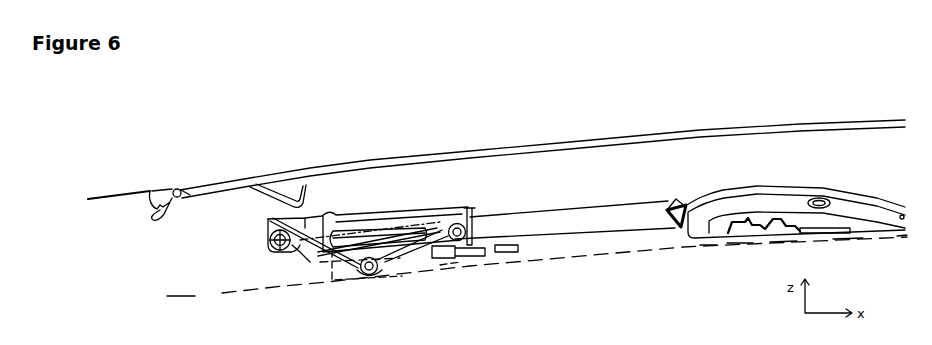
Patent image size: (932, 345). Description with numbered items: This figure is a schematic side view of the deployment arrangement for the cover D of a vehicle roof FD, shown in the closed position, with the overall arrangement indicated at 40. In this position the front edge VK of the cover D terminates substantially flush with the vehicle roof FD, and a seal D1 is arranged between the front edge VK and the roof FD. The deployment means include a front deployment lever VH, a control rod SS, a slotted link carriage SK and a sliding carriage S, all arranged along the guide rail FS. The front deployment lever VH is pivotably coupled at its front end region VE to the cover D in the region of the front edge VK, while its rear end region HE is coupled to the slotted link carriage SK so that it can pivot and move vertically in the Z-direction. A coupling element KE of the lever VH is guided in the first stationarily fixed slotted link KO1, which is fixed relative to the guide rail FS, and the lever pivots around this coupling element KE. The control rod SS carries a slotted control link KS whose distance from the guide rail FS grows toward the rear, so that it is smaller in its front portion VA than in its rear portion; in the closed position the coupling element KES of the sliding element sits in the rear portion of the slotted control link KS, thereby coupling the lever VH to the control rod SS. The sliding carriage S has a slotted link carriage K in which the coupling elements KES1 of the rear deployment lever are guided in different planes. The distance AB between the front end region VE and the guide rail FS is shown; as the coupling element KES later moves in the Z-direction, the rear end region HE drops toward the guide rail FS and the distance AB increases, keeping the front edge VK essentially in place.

The roof arrangement 40 is at (850, 69).
The cover D is at (570, 145).
The vehicle roof FD is at (110, 195).
The roof element edge D1 is at (160, 188).
The front edge VK is at (180, 191).
The rear end region HE is at (440, 251).
The control rod SS is at (573, 228).
The guide rail FS is at (169, 297).
The distance AB is at (295, 245).
The front deployment lever VH is at (358, 212).
The front end region VE is at (272, 255).
The slotted control link KS is at (320, 255).
The front portion VA is at (298, 261).
The coupling element KE is at (366, 275).
The first stationarily fixed slotted link KO1 is at (390, 264).
The coupling element KES is at (456, 223).
The slotted link carriage SK is at (468, 255).
The slotted link carriage K is at (698, 236).
The coupling element KES1 is at (826, 198).
The sliding carriage S is at (811, 219).